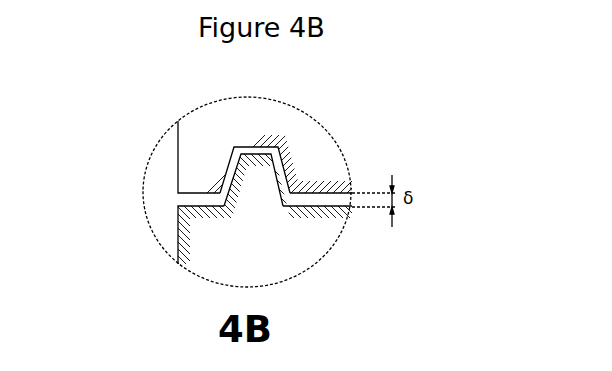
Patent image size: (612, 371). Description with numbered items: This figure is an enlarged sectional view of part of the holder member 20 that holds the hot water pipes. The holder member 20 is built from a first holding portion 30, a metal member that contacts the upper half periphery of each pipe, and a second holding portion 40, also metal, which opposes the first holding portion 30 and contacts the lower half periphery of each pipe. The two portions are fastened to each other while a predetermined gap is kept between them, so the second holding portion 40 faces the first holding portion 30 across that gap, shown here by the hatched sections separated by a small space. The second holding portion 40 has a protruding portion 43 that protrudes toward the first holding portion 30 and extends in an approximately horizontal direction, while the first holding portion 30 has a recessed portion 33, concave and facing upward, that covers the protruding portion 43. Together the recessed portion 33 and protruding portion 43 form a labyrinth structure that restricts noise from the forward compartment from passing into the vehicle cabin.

The holder member 20 is at (92, 138).
The first holding portion 30 is at (177, 160).
The second holding portion 40 is at (177, 228).
The recessed portion 33 is at (236, 146).
The protruding portion 43 is at (222, 207).